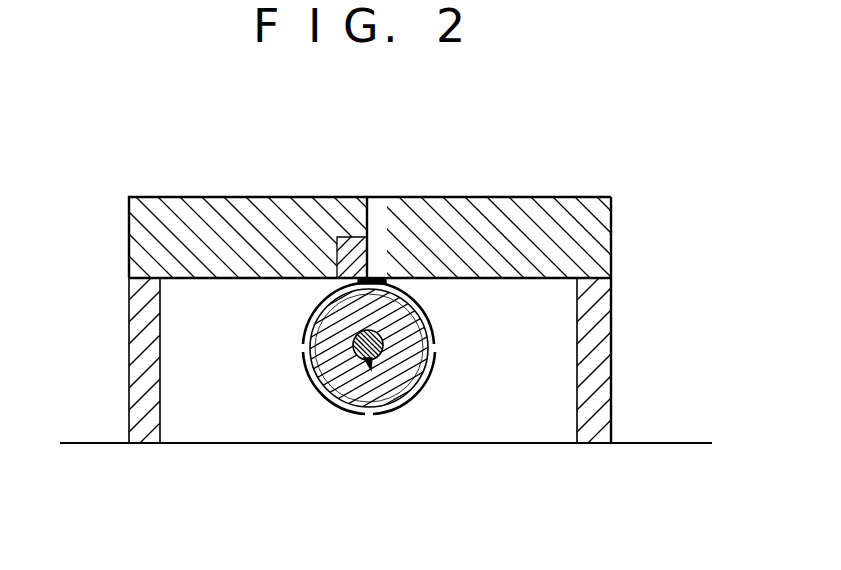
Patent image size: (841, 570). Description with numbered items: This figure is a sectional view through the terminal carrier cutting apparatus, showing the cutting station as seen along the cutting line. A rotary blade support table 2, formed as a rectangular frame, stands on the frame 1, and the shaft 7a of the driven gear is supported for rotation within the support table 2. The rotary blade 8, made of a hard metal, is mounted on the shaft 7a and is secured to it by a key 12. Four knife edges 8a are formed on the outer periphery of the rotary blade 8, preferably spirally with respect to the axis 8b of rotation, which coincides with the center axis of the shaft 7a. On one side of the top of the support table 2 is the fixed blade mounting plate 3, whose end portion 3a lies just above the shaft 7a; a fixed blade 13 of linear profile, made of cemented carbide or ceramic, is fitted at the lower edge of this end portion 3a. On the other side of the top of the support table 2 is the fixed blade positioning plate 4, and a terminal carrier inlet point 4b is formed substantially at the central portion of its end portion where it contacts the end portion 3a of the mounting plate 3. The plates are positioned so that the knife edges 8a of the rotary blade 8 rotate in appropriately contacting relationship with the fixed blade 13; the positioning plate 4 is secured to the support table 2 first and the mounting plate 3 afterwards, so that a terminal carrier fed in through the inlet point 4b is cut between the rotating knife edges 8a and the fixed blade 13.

The frame 1 is at (680, 442).
The rotary blade support table 2 is at (613, 342).
The fixed blade mounting plate 3 is at (220, 198).
The end portion of the fixed blade mounting plate 3a is at (357, 199).
The fixed blade 13 is at (335, 236).
The fixed blade positioning plate 4 is at (570, 197).
The terminal carrier inlet point 4b is at (385, 276).
The rotary blade 8 is at (400, 372).
The knife edges 8a is at (378, 276).
The axis of rotation of the rotary blade 8b is at (392, 310).
The key 12 is at (364, 362).
The shaft of the driven gear 7a is at (356, 356).